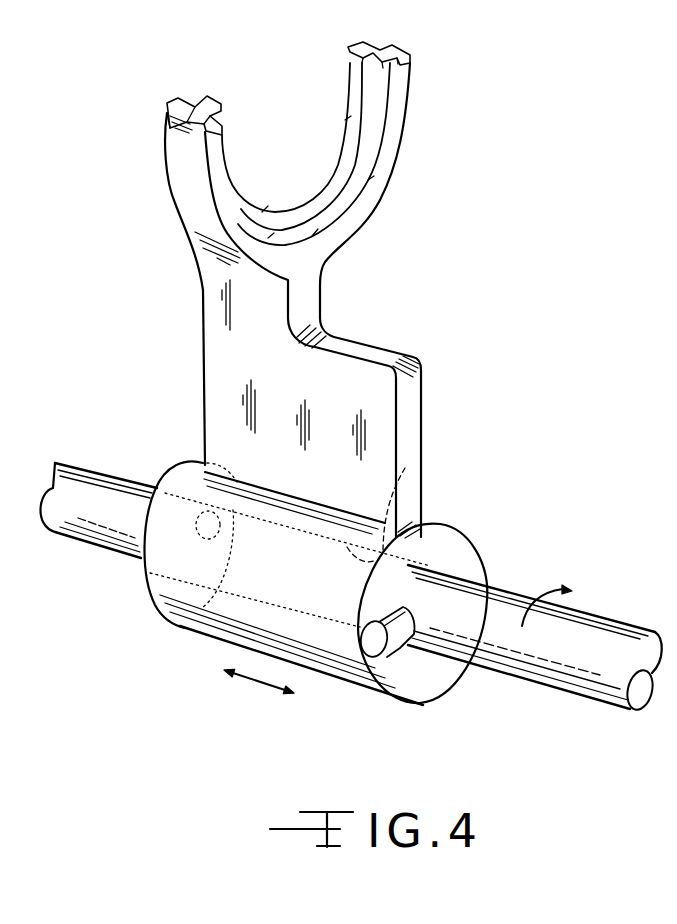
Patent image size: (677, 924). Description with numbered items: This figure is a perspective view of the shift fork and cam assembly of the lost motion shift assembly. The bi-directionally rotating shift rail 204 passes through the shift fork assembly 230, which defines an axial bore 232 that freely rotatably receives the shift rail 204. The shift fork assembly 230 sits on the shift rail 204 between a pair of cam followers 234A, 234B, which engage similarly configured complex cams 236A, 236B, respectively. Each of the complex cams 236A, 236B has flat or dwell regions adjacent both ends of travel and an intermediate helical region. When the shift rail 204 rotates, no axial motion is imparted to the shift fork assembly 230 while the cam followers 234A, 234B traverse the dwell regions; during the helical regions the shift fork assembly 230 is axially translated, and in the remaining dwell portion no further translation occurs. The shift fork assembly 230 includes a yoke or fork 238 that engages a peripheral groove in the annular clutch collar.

The shift rail 204 is at (607, 660).
The shift fork assembly 230 is at (229, 712).
The axial bore 232 is at (410, 470).
The cam follower 234A is at (200, 535).
The cam follower 234B is at (375, 637).
The complex cam 236A is at (158, 473).
The complex cam 236B is at (463, 553).
The yoke or fork 238 is at (387, 54).